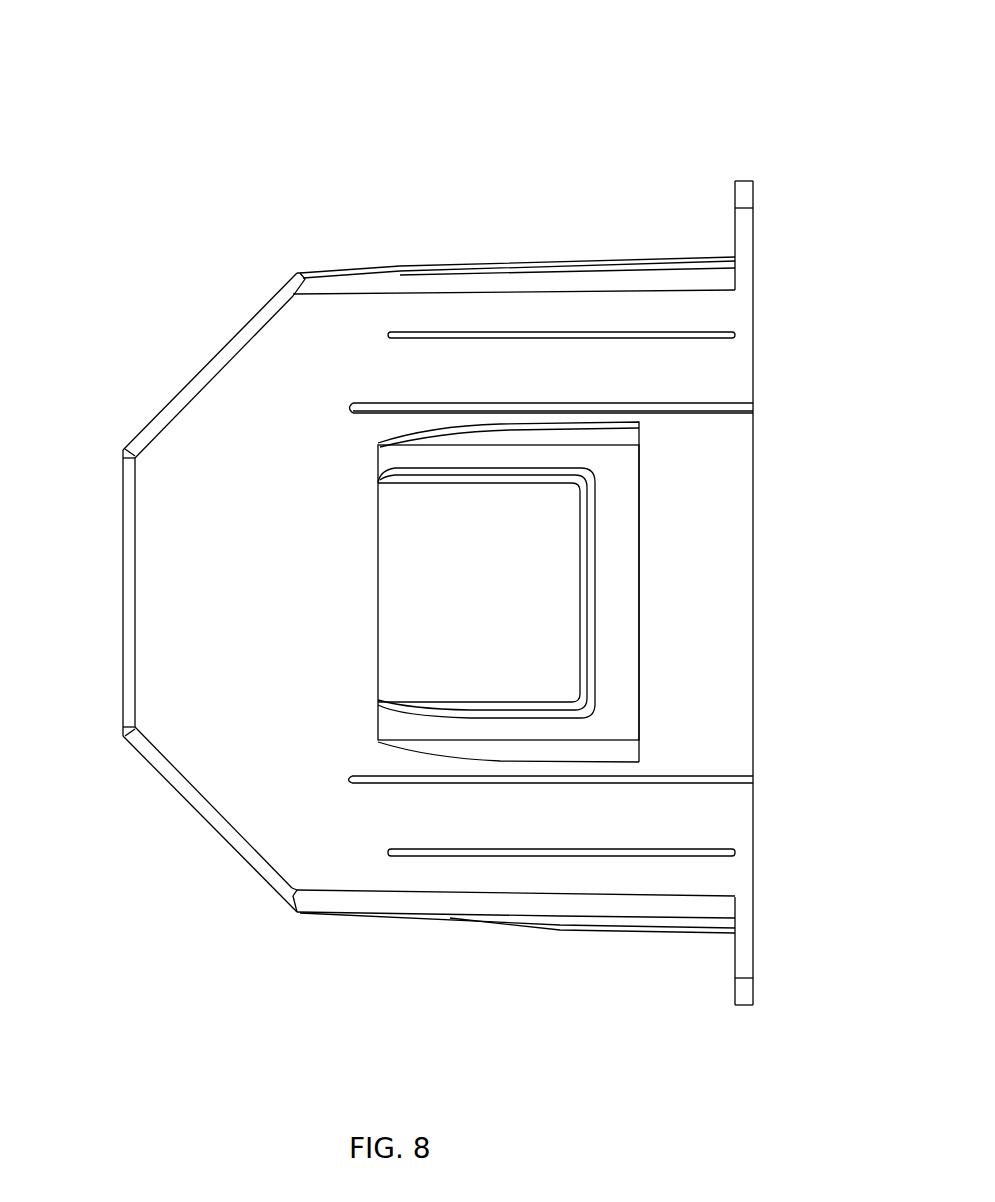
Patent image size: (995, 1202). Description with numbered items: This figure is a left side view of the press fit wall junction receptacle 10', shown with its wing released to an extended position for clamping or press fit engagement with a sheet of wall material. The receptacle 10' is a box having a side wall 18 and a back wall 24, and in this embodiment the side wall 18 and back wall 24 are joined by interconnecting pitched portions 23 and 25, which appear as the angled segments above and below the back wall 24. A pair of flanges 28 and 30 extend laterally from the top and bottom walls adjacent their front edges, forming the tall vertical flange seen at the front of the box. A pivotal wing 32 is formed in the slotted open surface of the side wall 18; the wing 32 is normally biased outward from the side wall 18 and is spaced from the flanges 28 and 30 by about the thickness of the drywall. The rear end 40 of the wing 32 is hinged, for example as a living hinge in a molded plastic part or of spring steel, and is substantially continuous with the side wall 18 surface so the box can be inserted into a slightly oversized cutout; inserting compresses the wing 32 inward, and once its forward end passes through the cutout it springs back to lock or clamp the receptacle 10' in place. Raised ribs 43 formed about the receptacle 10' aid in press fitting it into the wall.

The press fit wall junction receptacle 10' is at (451, 505).
The side wall 18 is at (303, 342).
The interconnecting pitched portion 23 is at (188, 382).
The back wall 24 is at (123, 517).
The interconnecting pitched portion 25 is at (157, 763).
The flange 28 is at (753, 247).
The flange 30 is at (753, 968).
The pivotal wing 32 is at (435, 463).
The rear end of wing 40 is at (348, 408).
The raised rib 43 is at (583, 328).